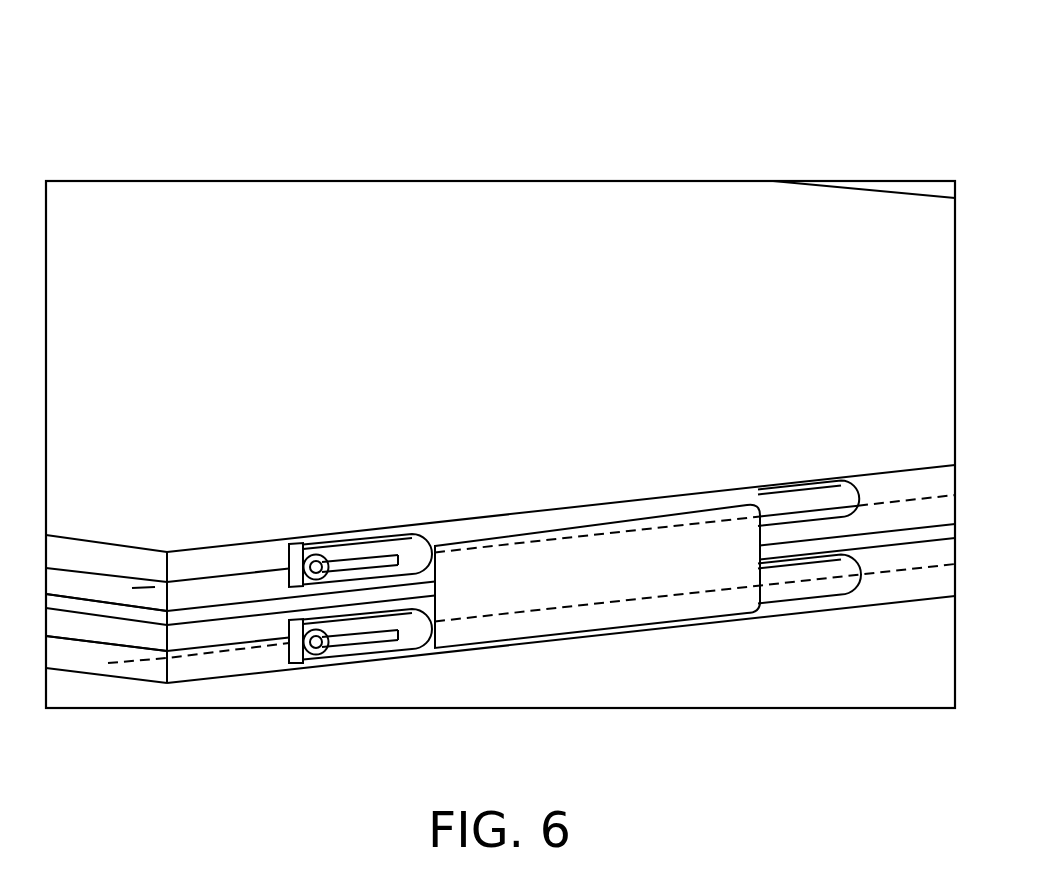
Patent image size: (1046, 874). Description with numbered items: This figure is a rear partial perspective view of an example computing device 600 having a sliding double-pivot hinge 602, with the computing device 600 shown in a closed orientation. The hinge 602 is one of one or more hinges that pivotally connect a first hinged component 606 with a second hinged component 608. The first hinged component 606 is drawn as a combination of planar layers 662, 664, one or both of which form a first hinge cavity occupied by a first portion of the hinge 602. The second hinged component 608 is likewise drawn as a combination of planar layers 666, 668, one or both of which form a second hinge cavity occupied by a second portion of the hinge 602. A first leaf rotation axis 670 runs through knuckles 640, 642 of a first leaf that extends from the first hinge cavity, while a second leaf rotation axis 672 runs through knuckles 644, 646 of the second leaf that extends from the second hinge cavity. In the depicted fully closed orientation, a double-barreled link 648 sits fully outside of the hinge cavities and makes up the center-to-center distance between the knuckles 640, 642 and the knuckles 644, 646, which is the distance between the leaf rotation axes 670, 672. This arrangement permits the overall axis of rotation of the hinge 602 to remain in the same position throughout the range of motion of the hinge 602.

The computing device 600 is at (471, 114).
The sliding double-pivot hinge 602 is at (546, 491).
The first hinged component 606 is at (848, 452).
The second hinged component 608 is at (857, 641).
The knuckle 640 is at (372, 551).
The knuckle 642 is at (802, 503).
The knuckle 644 is at (373, 653).
The knuckle 646 is at (808, 603).
The double-barreled link 648 is at (611, 590).
The planar layer 662 is at (222, 563).
The planar layer 664 is at (177, 600).
The planar layer 666 is at (240, 660).
The planar layer 668 is at (187, 637).
The first leaf rotation axis 670 is at (107, 590).
The second leaf rotation axis 672 is at (108, 663).